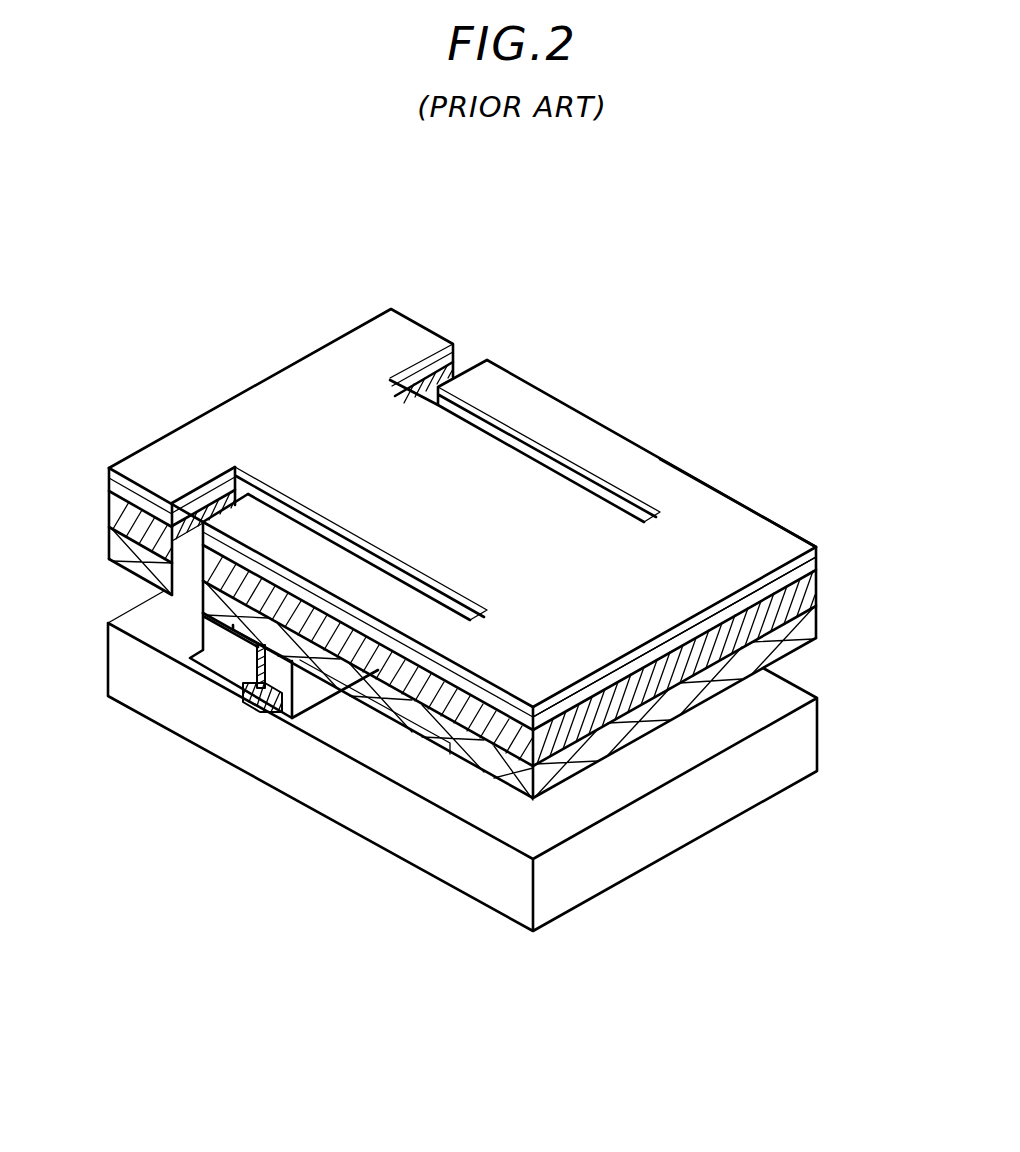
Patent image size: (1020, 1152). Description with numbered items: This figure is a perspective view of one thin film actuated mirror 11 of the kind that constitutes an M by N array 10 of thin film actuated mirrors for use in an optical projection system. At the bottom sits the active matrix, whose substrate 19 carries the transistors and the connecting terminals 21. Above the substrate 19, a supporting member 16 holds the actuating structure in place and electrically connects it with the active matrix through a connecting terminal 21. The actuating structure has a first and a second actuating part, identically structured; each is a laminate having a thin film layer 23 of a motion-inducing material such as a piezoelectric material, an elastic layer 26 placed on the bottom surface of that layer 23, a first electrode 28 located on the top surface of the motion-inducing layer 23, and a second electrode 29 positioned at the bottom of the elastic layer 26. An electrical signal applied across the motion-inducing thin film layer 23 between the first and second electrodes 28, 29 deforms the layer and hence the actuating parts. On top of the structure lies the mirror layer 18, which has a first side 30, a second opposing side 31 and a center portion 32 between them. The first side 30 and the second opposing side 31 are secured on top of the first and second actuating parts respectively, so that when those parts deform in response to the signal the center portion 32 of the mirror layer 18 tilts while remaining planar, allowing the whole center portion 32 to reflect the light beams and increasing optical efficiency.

The array 10 is at (216, 337).
The thin film actuated mirror 11 is at (445, 290).
The supporting member 16 is at (221, 642).
The mirror layer 18 is at (818, 553).
The substrate 19 is at (689, 820).
The connecting terminal 21 is at (250, 695).
The thin film layer of motion-inducing material 23 is at (818, 623).
The elastic layer 26 is at (797, 651).
The first electrode 28 is at (818, 583).
The second electrode 29 is at (451, 749).
The first side 30 is at (327, 567).
The second opposing side 31 is at (515, 405).
The center portion 32 is at (428, 493).